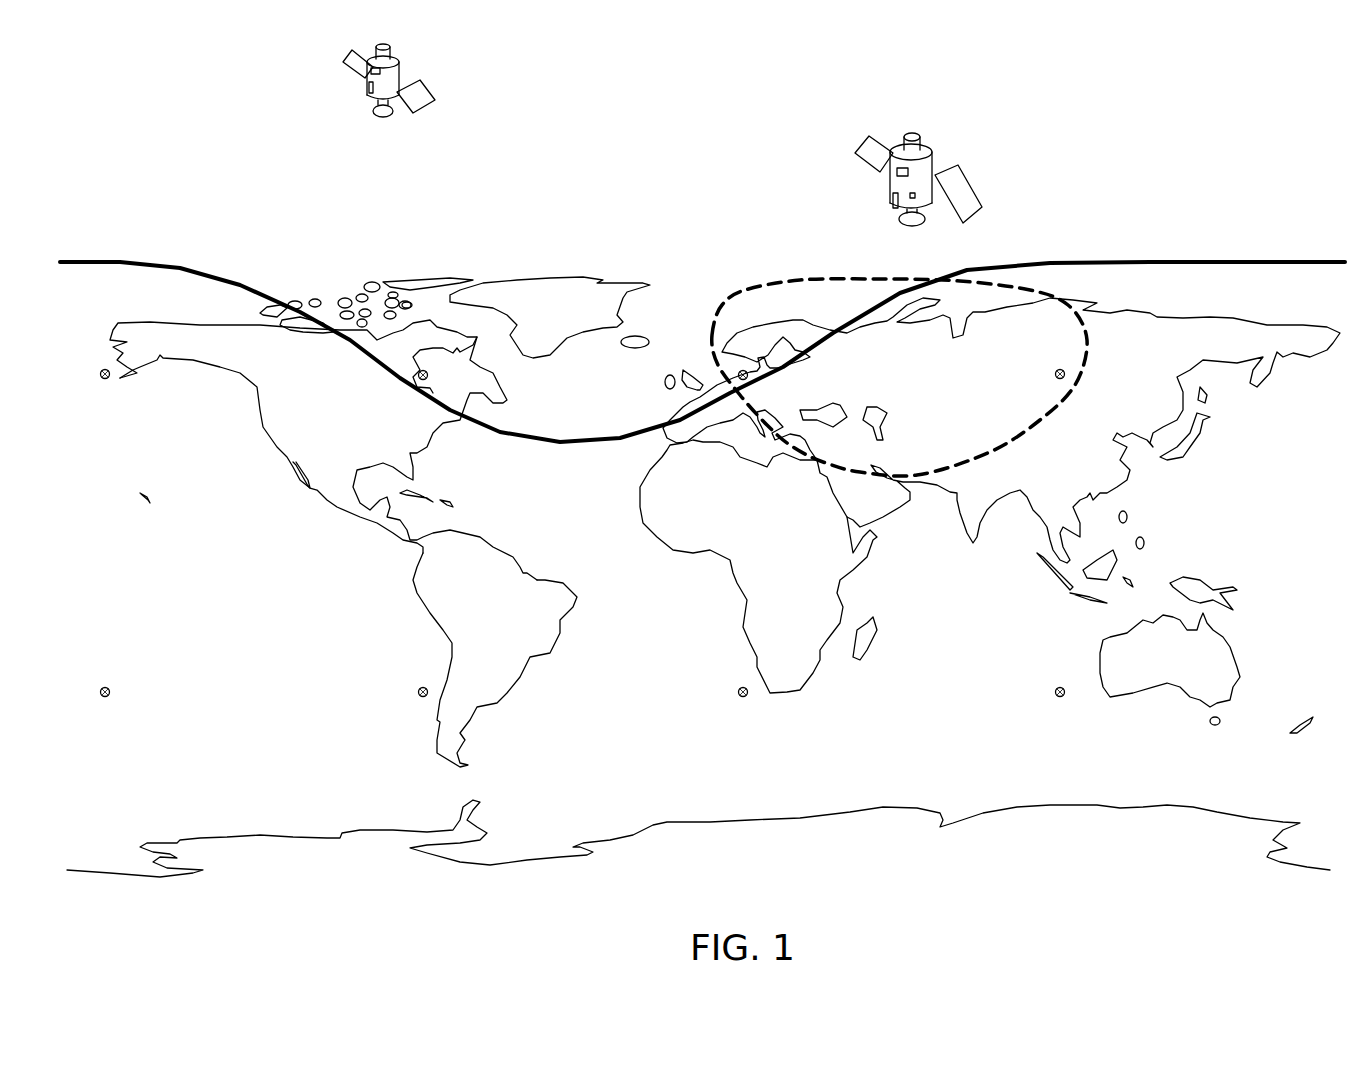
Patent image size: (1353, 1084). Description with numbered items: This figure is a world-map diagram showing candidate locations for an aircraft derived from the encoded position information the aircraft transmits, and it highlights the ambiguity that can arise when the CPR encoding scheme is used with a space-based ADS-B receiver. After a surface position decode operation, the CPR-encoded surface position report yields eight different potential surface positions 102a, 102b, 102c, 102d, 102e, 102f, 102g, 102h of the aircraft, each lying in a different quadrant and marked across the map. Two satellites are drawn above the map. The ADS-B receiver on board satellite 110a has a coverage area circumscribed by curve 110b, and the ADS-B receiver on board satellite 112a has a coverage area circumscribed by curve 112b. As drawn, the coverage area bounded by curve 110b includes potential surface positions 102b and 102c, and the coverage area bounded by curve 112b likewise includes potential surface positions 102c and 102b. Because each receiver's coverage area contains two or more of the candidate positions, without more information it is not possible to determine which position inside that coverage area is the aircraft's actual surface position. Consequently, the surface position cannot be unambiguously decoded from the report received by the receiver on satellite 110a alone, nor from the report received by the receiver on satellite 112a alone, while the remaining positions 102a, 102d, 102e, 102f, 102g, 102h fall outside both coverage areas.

The satellite 110a is at (400, 66).
The curve 110b is at (122, 262).
The satellite 112a is at (933, 162).
The curve 112b is at (790, 282).
The potential surface position 102a is at (104, 379).
The potential surface position 102b is at (422, 380).
The potential surface position 102c is at (748, 375).
The potential surface position 102d is at (1055, 375).
The potential surface position 102e is at (104, 697).
The potential surface position 102f is at (422, 697).
The potential surface position 102g is at (742, 697).
The potential surface position 102h is at (1059, 697).